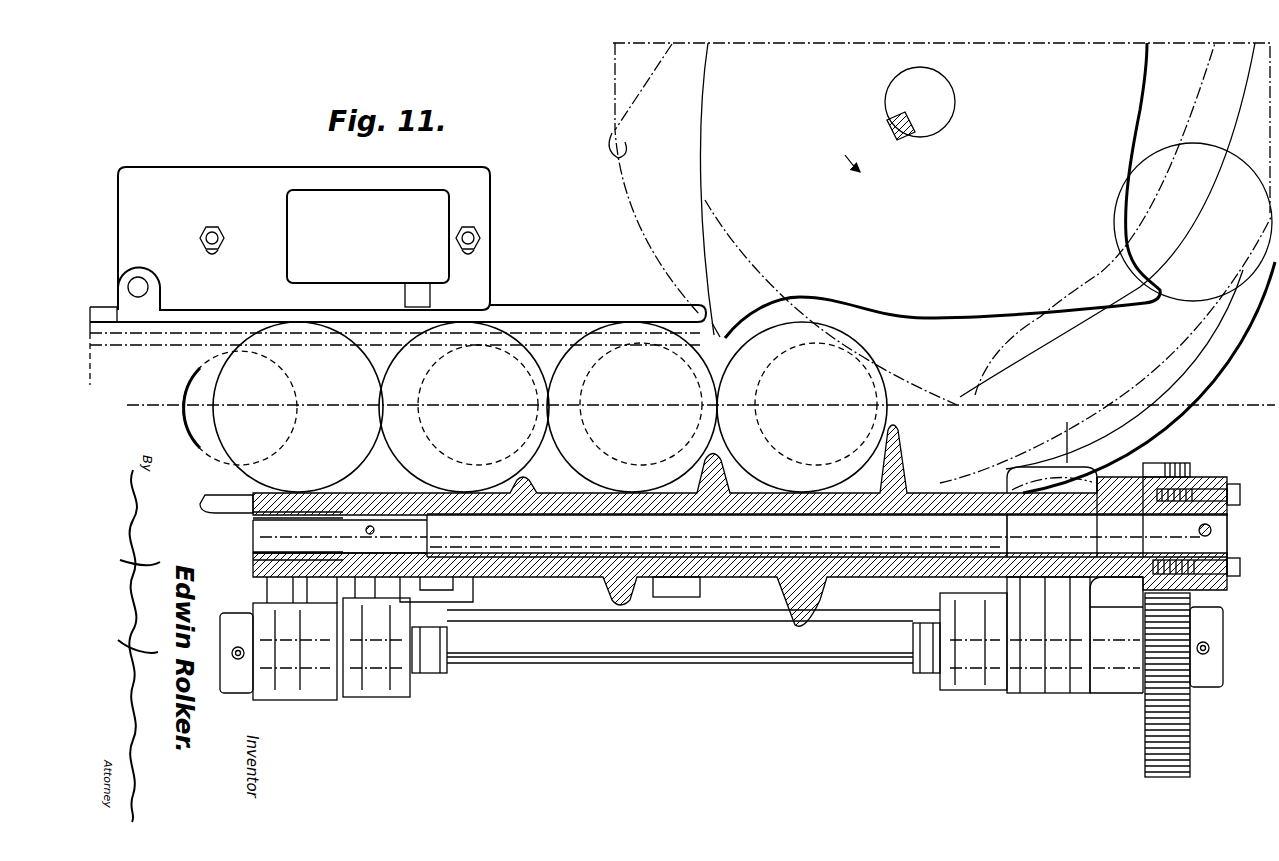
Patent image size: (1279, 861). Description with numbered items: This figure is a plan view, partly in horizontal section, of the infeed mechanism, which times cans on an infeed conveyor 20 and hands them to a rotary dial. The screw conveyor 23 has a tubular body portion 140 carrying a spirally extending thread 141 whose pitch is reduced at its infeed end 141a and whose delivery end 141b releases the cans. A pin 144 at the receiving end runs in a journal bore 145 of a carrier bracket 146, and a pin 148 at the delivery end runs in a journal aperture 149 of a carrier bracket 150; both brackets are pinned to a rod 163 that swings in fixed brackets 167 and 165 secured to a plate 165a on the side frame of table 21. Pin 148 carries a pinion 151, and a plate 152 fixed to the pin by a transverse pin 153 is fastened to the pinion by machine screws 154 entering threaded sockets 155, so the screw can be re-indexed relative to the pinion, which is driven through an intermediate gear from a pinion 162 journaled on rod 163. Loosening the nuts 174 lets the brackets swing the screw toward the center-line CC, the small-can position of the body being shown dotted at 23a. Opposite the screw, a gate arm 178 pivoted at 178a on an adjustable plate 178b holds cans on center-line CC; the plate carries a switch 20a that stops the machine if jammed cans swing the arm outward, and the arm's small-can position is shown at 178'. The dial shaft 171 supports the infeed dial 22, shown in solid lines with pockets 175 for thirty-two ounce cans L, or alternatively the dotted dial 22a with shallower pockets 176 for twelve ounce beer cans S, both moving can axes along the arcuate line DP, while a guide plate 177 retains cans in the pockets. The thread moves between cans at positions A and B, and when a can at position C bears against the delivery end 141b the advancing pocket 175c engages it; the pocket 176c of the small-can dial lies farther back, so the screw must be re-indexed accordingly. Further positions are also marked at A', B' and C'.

The plate 178b is at (258, 190).
The pivot 178a is at (148, 287).
The gate arm 178 is at (530, 401).
The dotted-line position of guide 178' is at (550, 311).
The switch 20a is at (450, 226).
The table 21 is at (553, 184).
The infeed conveyor 20 is at (362, 340).
The infeed dial 22 is at (707, 225).
The dial for small cans 22a is at (955, 386).
The screw conveyor 23 is at (713, 525).
The dotted-line position of screw conveyor body 23a is at (548, 470).
The dial shaft 171 is at (928, 108).
The pockets 175 is at (1135, 303).
The pocket of infeed dial 175c is at (747, 326).
The pockets 176 is at (977, 390).
The pocket of dial 176c is at (622, 158).
The guide plate 177 is at (1071, 434).
The tubular body portion 140 is at (573, 565).
The thread 141 is at (640, 612).
The infeed end of thread 141a is at (496, 598).
The delivery end of thread 141b is at (905, 470).
The pin 144 is at (372, 526).
The journal bore 145 is at (253, 550).
The carrier bracket 146 is at (326, 692).
The pin 148 is at (1106, 525).
The journal aperture 149 is at (1048, 634).
The carrier bracket 150 is at (1116, 634).
The pinion 151 is at (1168, 462).
The plate 152 is at (1220, 564).
The transverse pin 153 is at (1212, 530).
The machine screws 154 is at (1233, 490).
The threaded sockets 155 is at (1190, 487).
The pinion 162 is at (1152, 726).
The rod 163 is at (617, 658).
The fixed bracket 165 is at (992, 684).
The plate 165a is at (745, 612).
The fixed bracket 167 is at (402, 698).
The nut 174 is at (432, 674).
The position A is at (469, 296).
The drum A prime A' is at (464, 407).
The position B is at (617, 301).
The drum B prime B' is at (632, 407).
The position C is at (893, 368).
The drum C prime C' is at (802, 407).
The center-line CC is at (298, 407).
The cans L is at (505, 328).
The beer cans S is at (345, 478).
The arcuate line DP is at (1070, 362).